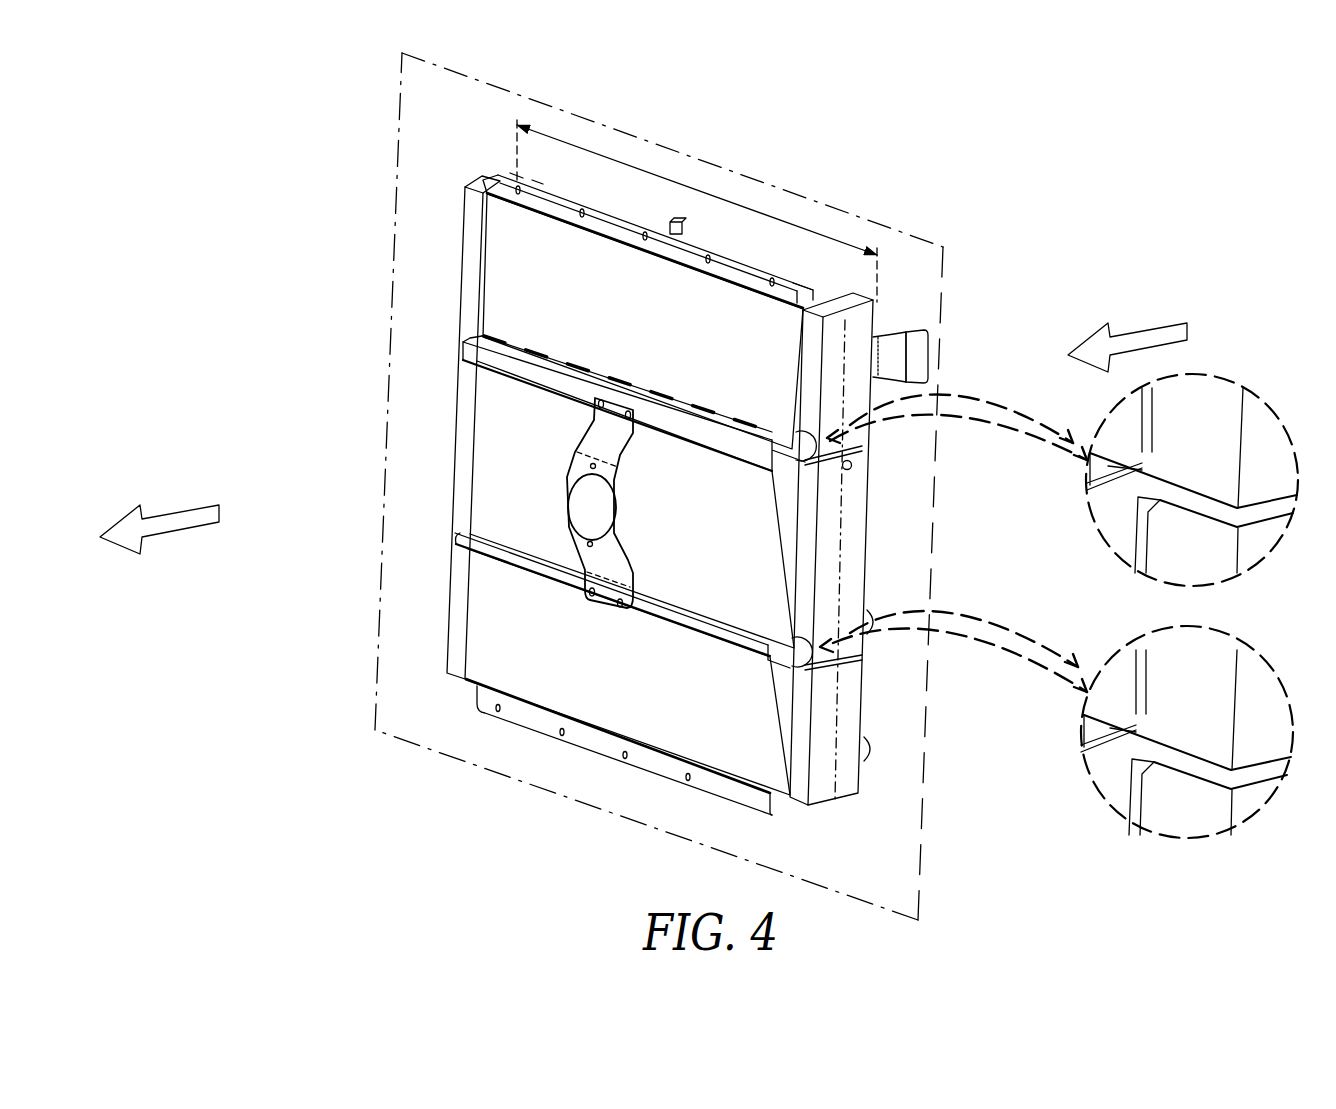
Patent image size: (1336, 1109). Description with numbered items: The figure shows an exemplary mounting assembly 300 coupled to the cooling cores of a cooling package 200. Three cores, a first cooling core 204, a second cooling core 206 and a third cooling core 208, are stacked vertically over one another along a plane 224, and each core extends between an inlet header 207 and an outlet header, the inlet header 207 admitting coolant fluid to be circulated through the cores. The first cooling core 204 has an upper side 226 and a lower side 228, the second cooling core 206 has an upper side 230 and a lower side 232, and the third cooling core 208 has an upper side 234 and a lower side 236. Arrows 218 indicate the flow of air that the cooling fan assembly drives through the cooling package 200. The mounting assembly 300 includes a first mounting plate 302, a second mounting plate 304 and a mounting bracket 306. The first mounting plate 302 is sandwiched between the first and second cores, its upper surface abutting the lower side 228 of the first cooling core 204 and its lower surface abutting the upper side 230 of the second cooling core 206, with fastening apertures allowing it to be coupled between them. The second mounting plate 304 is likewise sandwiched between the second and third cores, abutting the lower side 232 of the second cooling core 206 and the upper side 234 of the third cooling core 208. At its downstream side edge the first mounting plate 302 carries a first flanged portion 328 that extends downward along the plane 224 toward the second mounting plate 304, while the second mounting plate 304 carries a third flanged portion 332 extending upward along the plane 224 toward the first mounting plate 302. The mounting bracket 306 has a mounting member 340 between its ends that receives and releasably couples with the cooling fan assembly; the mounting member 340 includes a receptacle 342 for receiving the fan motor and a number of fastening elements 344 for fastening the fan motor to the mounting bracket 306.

The cooling package 200 is at (702, 486).
The first cooling core 204 is at (770, 352).
The second cooling core 206 is at (760, 541).
The inlet header 207 is at (926, 334).
The third cooling core 208 is at (762, 716).
The arrows 218 is at (1163, 322).
The plane 224 is at (836, 206).
The upper side 226 is at (815, 302).
The lower side 228 is at (1107, 465).
The upper side 230 is at (1155, 469).
The lower side 232 is at (1110, 728).
The upper side 234 is at (1154, 730).
The lower side 236 is at (781, 800).
The mounting assembly 300 is at (648, 495).
The first mounting plate 302 is at (780, 463).
The second mounting plate 304 is at (773, 664).
The mounting bracket 306 is at (460, 495).
The first flanged portion 328 is at (485, 360).
The third flanged portion 332 is at (455, 540).
The mounting member 340 is at (454, 510).
The receptacle 342 is at (592, 517).
The fastening elements 344 is at (593, 466).